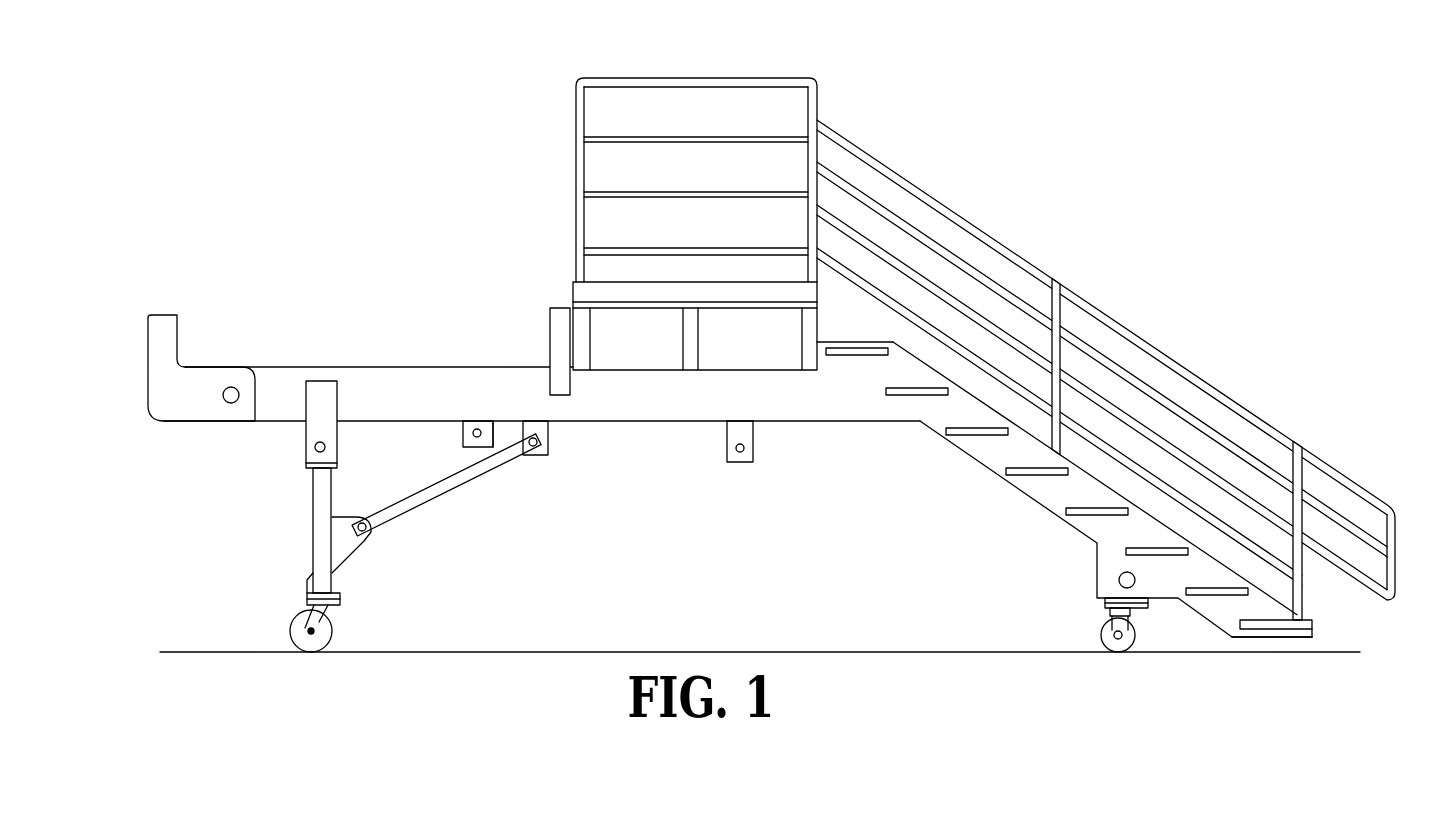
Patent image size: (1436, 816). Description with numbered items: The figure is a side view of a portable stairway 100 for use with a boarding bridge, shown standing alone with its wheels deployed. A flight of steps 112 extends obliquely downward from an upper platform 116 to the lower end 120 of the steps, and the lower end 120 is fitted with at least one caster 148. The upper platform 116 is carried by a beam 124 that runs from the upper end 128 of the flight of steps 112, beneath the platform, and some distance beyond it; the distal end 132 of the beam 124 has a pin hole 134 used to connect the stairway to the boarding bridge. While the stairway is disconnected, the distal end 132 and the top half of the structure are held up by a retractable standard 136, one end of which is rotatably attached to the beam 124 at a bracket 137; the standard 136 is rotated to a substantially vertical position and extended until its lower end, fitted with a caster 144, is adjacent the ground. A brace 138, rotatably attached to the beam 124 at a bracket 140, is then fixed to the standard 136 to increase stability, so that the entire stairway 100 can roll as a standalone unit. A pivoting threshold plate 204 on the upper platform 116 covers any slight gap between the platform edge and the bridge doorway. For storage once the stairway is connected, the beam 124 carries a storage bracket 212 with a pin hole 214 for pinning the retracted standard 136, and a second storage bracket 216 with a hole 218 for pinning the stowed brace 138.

The stairway 100 is at (1037, 187).
The flight of steps 112 is at (1112, 483).
The upper platform 116 is at (675, 282).
The lower end of the flight of steps 120 is at (1283, 645).
The beam 124 is at (422, 366).
The upper end of the flight of steps 128 is at (877, 340).
The distal end of the beam 132 is at (228, 365).
The pin hole 134 is at (242, 393).
The standard 136 is at (312, 532).
The bracket 137 is at (305, 433).
The brace 138 is at (457, 490).
The bracket 140 is at (549, 435).
The caster 144 is at (334, 632).
The caster 148 is at (1102, 637).
The pivoting threshold plate 204 is at (572, 303).
The storage bracket 212 is at (492, 447).
The pin hole 214 is at (462, 432).
The second storage bracket 216 is at (740, 462).
The hole 218 is at (745, 448).